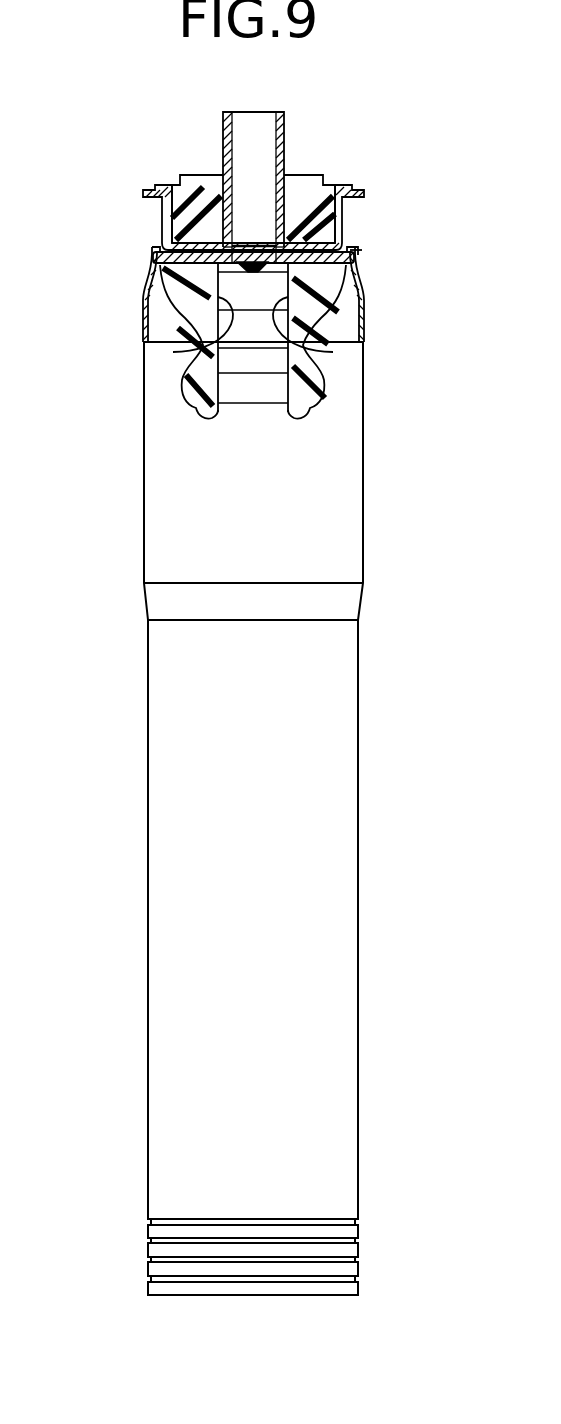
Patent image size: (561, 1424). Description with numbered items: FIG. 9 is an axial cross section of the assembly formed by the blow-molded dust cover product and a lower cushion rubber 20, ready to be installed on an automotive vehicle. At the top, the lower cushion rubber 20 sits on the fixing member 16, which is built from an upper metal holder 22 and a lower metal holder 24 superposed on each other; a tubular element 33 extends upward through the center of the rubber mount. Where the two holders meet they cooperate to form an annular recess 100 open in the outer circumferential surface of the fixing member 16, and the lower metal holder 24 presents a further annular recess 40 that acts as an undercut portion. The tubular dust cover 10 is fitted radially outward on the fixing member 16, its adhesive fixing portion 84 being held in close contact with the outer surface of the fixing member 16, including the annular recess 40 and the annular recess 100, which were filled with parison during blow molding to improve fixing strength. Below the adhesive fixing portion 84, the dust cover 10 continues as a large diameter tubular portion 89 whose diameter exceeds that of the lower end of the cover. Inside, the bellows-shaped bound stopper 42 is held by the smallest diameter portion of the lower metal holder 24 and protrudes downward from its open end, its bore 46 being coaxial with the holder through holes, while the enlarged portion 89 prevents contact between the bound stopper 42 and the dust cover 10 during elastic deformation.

The dust cover 10 is at (387, 763).
The fixing member 16 is at (70, 230).
The lower cushion rubber 20 is at (313, 198).
The upper metal holder 22 is at (167, 220).
The lower metal holder 24 is at (162, 293).
The sleeve tube 33 is at (284, 145).
The annular recess 40 is at (358, 300).
The bound stopper 42 is at (185, 390).
The bore 46 is at (192, 348).
The adhesive fixing portion 84 is at (350, 247).
The large diameter tubular portion 89 is at (363, 465).
The annular recess 100 is at (357, 248).